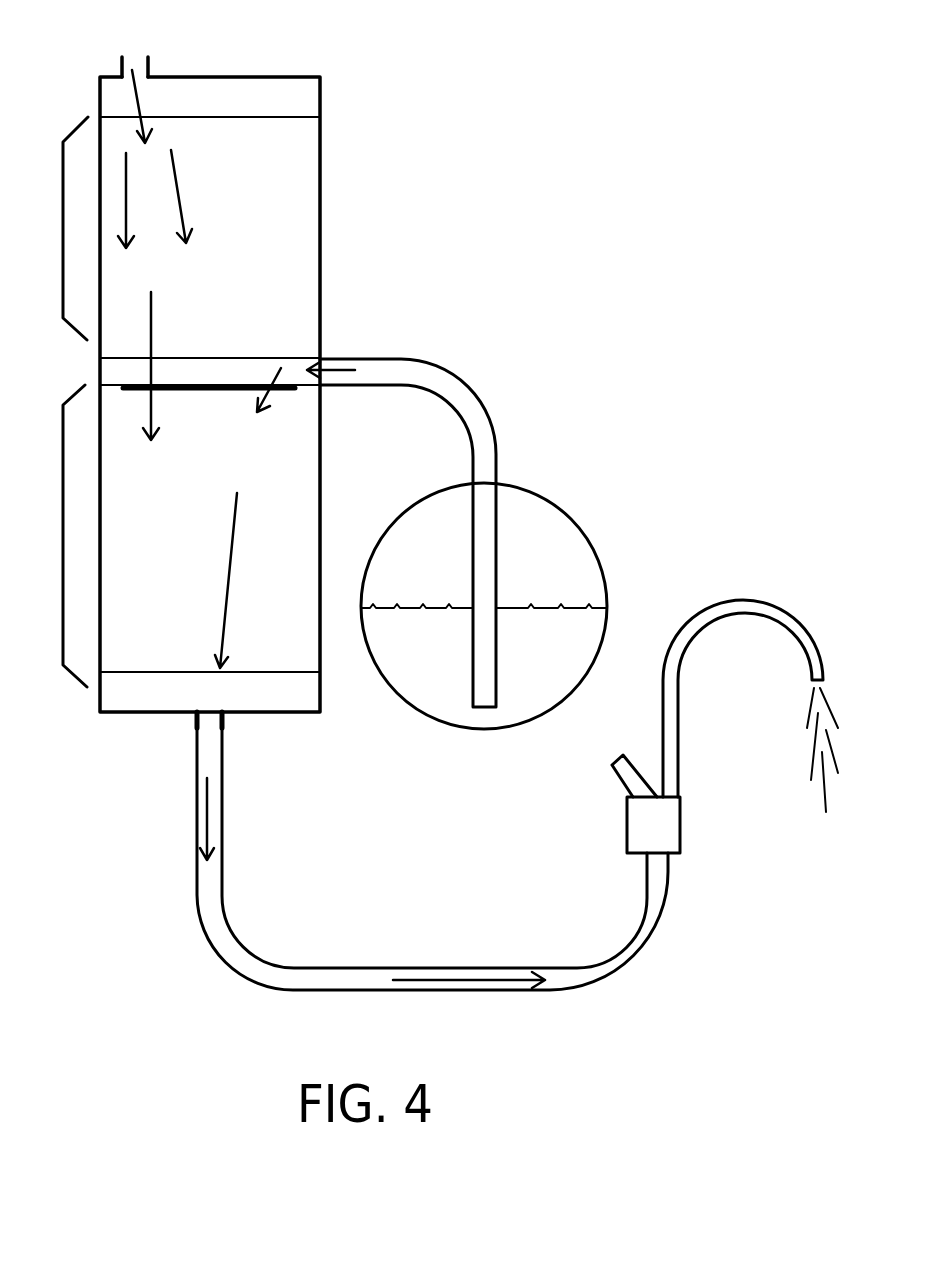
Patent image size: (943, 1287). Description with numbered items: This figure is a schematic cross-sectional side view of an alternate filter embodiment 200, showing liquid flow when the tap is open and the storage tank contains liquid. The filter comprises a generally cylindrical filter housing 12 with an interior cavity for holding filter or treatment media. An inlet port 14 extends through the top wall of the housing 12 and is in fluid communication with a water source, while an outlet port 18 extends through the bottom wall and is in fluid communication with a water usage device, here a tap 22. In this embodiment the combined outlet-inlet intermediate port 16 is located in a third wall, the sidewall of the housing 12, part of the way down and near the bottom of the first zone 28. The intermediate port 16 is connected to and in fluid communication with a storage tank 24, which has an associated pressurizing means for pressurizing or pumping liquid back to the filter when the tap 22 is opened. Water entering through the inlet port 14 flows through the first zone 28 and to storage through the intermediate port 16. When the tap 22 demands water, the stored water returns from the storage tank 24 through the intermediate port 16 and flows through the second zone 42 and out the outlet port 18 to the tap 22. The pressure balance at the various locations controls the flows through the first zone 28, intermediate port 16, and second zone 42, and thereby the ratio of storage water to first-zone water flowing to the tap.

The alternate filter embodiment 200 is at (605, 147).
The filter housing 12 is at (320, 248).
The inlet port 14 is at (120, 62).
The intermediate port 16 is at (330, 365).
The outlet port 18 is at (190, 720).
The tap 22 is at (702, 870).
The storage tank 24 is at (583, 493).
The first zone 28 is at (60, 217).
The second zone 42 is at (61, 512).